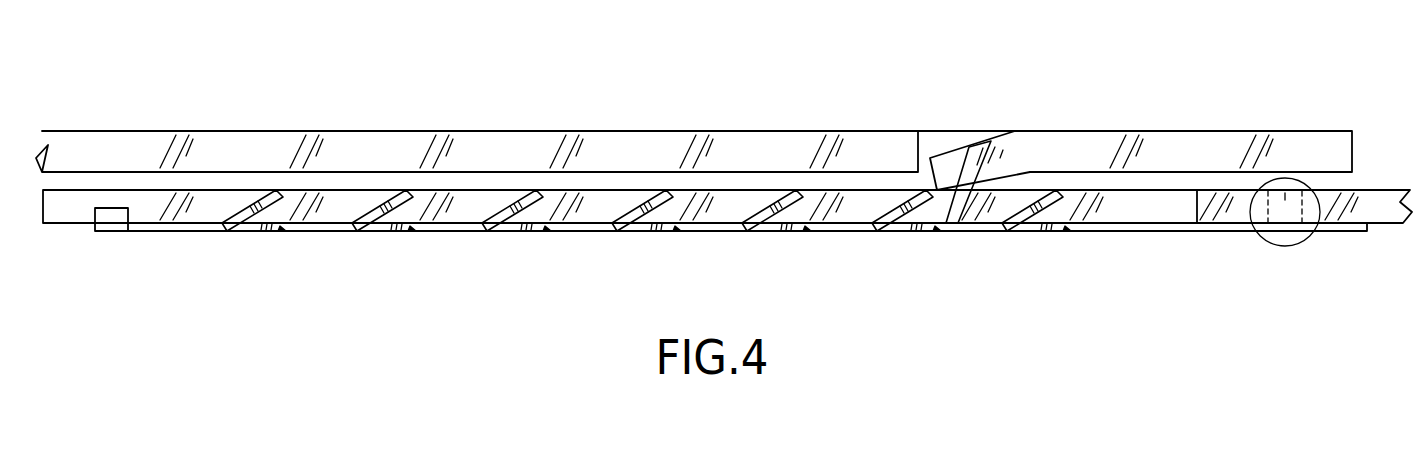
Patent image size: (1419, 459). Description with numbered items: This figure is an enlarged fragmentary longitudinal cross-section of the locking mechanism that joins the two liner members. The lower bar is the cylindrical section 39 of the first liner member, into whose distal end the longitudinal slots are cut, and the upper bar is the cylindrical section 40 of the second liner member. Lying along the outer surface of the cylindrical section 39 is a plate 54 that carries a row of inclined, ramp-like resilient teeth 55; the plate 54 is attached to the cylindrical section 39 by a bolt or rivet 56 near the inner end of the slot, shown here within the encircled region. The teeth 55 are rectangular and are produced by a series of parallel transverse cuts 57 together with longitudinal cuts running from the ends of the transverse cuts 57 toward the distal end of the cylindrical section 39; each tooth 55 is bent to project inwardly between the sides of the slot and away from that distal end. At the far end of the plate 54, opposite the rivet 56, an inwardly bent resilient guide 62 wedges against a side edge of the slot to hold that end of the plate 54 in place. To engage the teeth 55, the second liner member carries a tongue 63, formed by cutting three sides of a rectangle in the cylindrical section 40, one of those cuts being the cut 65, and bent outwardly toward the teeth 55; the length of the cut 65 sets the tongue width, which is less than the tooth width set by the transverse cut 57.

The cylindrical section 39 is at (1388, 248).
The cylindrical section 40 is at (1225, 118).
The plate 54 is at (1347, 234).
The resilient teeth 55 is at (253, 214).
The rivet 56 is at (1270, 243).
The transverse cuts 57 is at (411, 231).
The resilient guide 62 is at (93, 213).
The tongues 63 is at (969, 147).
The cut 65 is at (918, 152).